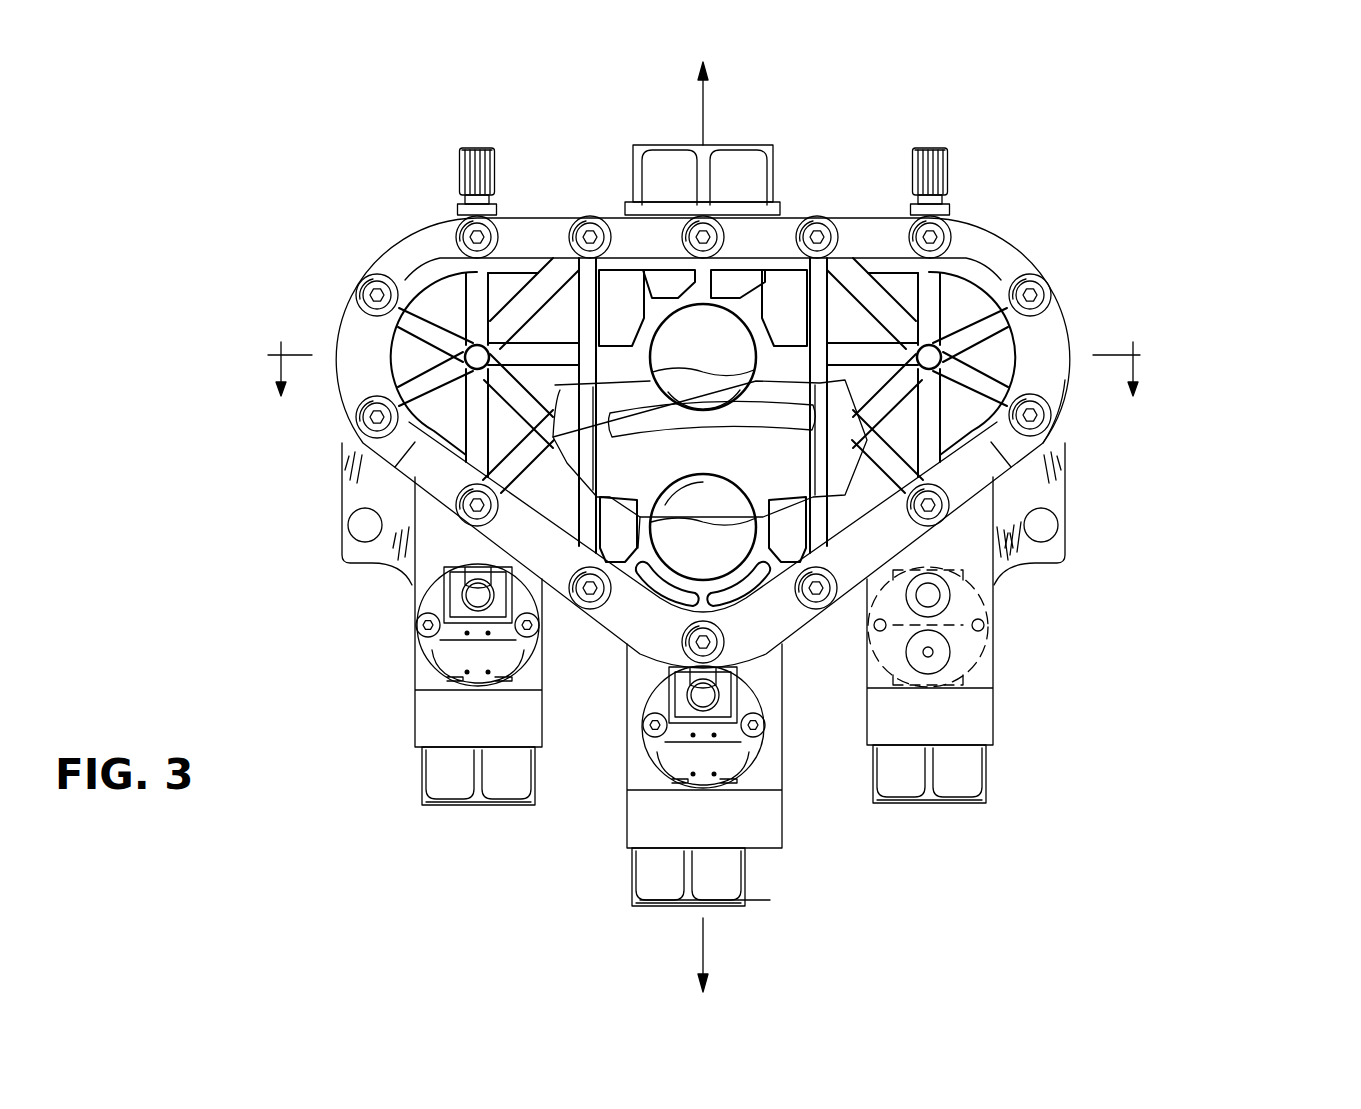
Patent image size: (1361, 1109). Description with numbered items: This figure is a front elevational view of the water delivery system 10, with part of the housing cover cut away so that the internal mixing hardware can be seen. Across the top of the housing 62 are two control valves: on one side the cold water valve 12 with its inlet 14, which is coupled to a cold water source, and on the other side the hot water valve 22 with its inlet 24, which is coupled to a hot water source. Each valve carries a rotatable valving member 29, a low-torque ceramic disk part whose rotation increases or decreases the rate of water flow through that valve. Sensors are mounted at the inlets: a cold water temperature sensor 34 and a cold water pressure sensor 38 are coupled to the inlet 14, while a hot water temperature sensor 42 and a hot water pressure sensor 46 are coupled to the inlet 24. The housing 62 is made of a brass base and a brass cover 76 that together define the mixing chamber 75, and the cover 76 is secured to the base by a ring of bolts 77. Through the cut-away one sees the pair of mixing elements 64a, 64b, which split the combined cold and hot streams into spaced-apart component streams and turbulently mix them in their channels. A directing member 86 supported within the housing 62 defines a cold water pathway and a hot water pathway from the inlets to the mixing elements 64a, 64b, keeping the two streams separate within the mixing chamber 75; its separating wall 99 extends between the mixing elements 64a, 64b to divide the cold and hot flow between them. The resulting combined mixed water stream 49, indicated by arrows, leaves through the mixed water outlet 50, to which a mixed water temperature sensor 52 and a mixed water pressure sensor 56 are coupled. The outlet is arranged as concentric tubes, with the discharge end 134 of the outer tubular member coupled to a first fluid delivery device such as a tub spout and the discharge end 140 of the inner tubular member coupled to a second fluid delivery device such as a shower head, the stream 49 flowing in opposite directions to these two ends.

The water delivery system 10 is at (1220, 192).
The cold water valve 12 is at (946, 168).
The inlet 14 is at (985, 790).
The hot water valve 22 is at (461, 168).
The inlet 24 is at (420, 780).
The rotatable valving member 29 is at (477, 146).
The cold water temperature sensor 34 is at (995, 615).
The cold water pressure sensor 38 is at (990, 675).
The hot water temperature sensor 42 is at (455, 594).
The hot water pressure sensor 46 is at (450, 665).
The combined mixed water stream 49 is at (703, 95).
The mixed water outlet 50 is at (614, 832).
The mixed water temperature sensor 52 is at (722, 697).
The mixed water pressure sensor 56 is at (740, 757).
The housing 62 is at (1026, 246).
The mixing element 64a is at (704, 390).
The mixing element 64b is at (704, 488).
The mixing chamber 75 is at (575, 470).
The cover 76 is at (1052, 368).
The bolts 77 is at (366, 286).
The directing member 86 is at (633, 505).
The separating wall 99 is at (757, 437).
The discharge end 134 is at (667, 907).
The discharge end 140 is at (655, 143).